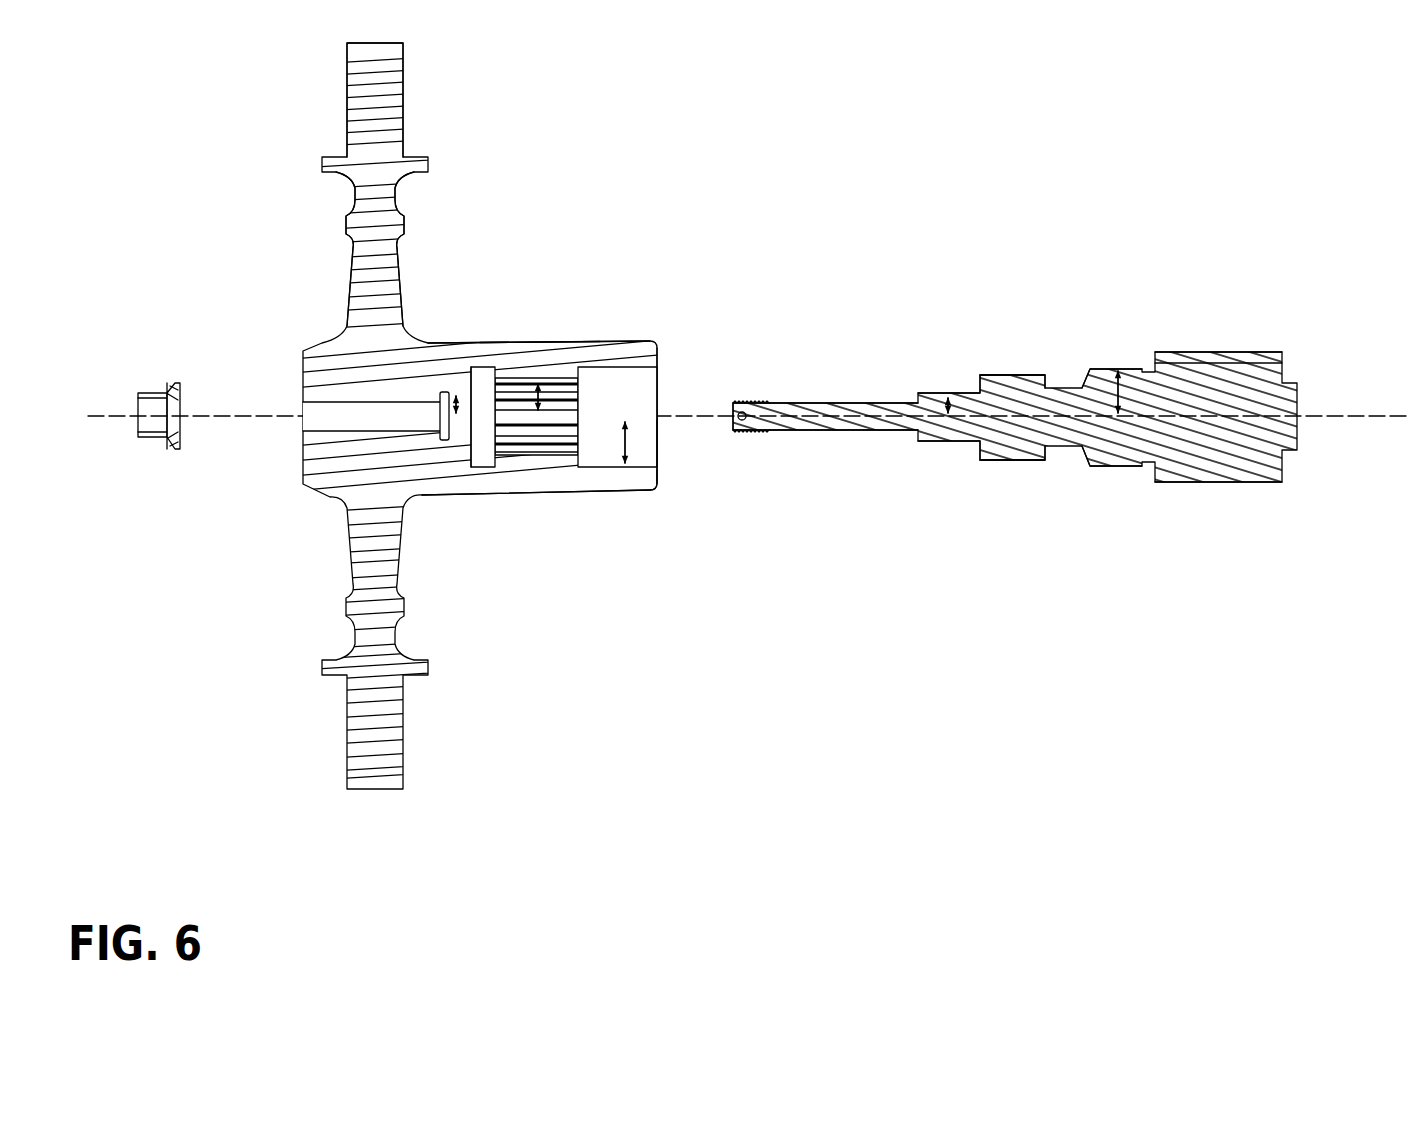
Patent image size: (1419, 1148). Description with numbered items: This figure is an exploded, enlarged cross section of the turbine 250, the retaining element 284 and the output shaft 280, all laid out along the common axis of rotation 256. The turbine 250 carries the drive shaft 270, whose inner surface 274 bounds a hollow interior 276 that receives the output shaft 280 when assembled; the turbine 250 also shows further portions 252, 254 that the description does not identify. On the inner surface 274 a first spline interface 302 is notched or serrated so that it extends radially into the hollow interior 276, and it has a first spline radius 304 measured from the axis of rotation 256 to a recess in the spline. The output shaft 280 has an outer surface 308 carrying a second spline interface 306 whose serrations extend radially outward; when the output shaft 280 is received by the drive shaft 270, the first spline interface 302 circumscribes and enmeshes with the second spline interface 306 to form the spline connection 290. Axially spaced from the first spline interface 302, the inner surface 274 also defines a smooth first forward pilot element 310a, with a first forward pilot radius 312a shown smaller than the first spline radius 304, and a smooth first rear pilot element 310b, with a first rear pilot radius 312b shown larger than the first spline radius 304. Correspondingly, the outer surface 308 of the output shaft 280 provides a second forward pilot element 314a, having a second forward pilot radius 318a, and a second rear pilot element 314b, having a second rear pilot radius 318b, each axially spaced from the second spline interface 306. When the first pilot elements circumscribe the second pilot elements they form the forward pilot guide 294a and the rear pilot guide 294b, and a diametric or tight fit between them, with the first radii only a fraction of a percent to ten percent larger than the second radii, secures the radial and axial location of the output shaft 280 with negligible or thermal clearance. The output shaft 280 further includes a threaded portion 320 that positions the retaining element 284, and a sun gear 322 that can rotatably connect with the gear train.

The turbine 250 is at (405, 568).
The first shaft portion 252 is at (397, 260).
The second shaft portion 254 is at (404, 93).
The axis of rotation 256 is at (1355, 412).
The drive shaft 270 is at (533, 333).
The inner surface 274 is at (648, 376).
The hollow interior 276 is at (630, 403).
The output shaft 280 is at (836, 393).
The retaining element 284 is at (165, 438).
The spline connection 290 is at (530, 500).
The forward pilot guide 294a is at (462, 330).
The rear pilot guide 294b is at (655, 498).
The first spline interface 302 is at (563, 456).
The first spline radius 304 is at (558, 377).
The second spline interface 306 is at (1007, 375).
The outer surface 308 is at (830, 432).
The first forward pilot element 310a is at (462, 447).
The first rear pilot element 310b is at (603, 372).
The first forward pilot radius 312a is at (458, 404).
The first rear pilot radius 312b is at (658, 441).
The second forward pilot element 314a is at (928, 390).
The second rear pilot element 314b is at (1105, 468).
The second forward pilot radius 318a is at (947, 397).
The second rear pilot radius 318b is at (1122, 372).
The threaded portion 320 is at (740, 405).
The sun gear 322 is at (1210, 350).